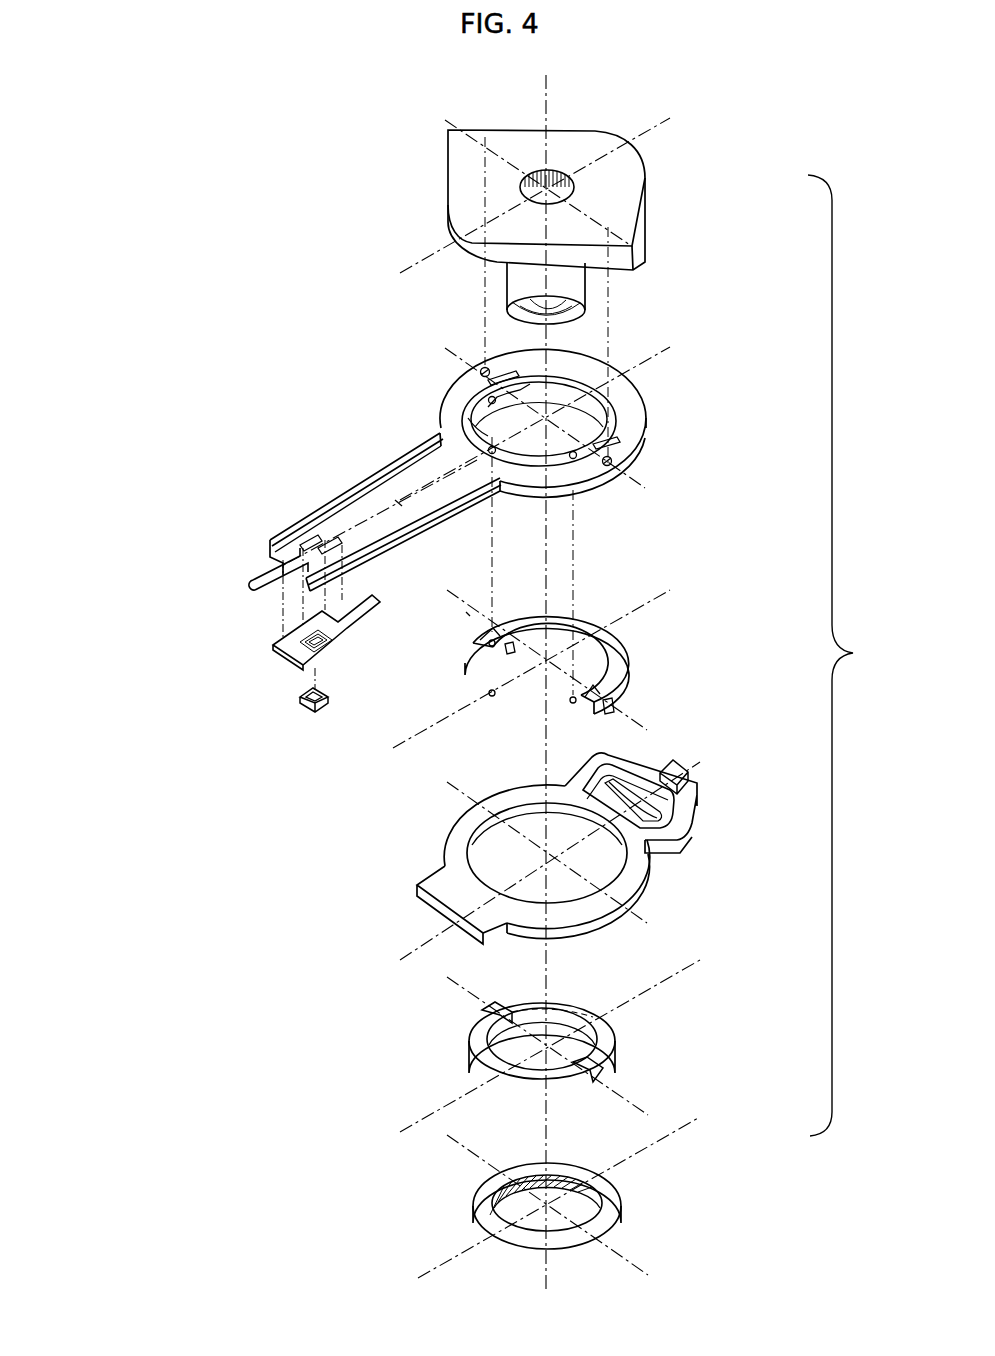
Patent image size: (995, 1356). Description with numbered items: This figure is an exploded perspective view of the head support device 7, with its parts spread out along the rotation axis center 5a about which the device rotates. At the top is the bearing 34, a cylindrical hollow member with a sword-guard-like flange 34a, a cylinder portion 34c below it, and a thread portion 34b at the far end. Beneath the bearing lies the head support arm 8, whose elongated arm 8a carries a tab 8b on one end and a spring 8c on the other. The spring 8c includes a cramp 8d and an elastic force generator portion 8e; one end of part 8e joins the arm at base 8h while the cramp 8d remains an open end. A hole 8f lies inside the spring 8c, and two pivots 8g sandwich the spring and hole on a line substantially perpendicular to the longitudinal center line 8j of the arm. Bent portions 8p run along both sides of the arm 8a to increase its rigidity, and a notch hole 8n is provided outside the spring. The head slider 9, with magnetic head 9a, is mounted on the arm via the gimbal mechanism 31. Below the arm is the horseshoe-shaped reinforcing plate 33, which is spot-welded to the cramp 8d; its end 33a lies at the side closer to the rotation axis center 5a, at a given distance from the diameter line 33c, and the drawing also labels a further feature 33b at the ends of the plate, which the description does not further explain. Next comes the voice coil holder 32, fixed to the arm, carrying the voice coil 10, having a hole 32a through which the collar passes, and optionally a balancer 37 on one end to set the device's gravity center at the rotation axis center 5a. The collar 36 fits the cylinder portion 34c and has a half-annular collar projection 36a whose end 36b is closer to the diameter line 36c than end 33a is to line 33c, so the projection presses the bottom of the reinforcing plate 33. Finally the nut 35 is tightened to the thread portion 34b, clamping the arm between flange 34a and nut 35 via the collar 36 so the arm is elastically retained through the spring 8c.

The head support device 7 is at (884, 672).
The rotation axis center 5a is at (548, 103).
The bearing 34 is at (608, 221).
The flange 34a is at (618, 190).
The thread portion 34b is at (629, 276).
The cylinder portion 34c is at (640, 237).
The head support arm 8 is at (487, 460).
The arm 8a is at (403, 482).
The tab 8b is at (260, 573).
The spring 8c is at (425, 391).
The cramp 8d is at (473, 422).
The elastic force generator portion 8e is at (505, 378).
The hole 8f is at (537, 437).
The pivots 8g is at (497, 358).
The base 8h is at (617, 440).
The longitudinal center line 8j is at (398, 503).
The notch hole 8n is at (498, 482).
The bent portions 8p is at (390, 540).
The gimbal mechanism 31 is at (273, 643).
The head slider 9 is at (264, 718).
The magnetic head 9a is at (305, 705).
The reinforcing plate 33 is at (528, 631).
The end of reinforcing plate 33a is at (493, 630).
The engaging piece of retaining ring 33b is at (513, 628).
The diameter line 33c is at (468, 610).
The voice coil holder 32 is at (546, 786).
The hole 32a is at (512, 853).
The voice coil 10 is at (630, 767).
The balancer 37 is at (676, 768).
The collar 36 is at (587, 1041).
The collar projection 36a is at (472, 1045).
The end of collar projection 36b is at (600, 1064).
The diameter line 36c is at (480, 1005).
The nut 35 is at (617, 1200).